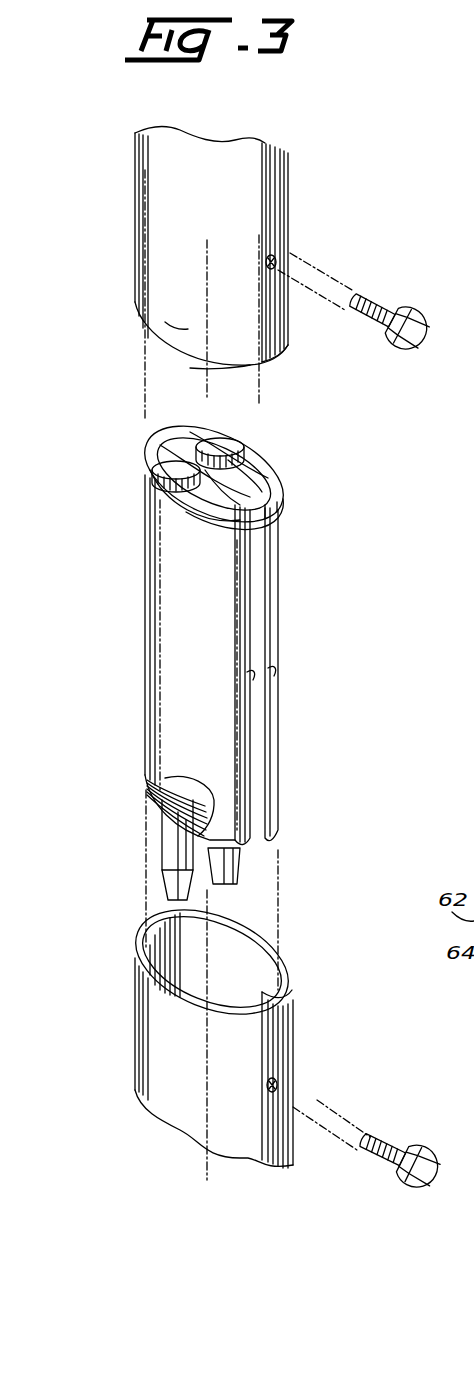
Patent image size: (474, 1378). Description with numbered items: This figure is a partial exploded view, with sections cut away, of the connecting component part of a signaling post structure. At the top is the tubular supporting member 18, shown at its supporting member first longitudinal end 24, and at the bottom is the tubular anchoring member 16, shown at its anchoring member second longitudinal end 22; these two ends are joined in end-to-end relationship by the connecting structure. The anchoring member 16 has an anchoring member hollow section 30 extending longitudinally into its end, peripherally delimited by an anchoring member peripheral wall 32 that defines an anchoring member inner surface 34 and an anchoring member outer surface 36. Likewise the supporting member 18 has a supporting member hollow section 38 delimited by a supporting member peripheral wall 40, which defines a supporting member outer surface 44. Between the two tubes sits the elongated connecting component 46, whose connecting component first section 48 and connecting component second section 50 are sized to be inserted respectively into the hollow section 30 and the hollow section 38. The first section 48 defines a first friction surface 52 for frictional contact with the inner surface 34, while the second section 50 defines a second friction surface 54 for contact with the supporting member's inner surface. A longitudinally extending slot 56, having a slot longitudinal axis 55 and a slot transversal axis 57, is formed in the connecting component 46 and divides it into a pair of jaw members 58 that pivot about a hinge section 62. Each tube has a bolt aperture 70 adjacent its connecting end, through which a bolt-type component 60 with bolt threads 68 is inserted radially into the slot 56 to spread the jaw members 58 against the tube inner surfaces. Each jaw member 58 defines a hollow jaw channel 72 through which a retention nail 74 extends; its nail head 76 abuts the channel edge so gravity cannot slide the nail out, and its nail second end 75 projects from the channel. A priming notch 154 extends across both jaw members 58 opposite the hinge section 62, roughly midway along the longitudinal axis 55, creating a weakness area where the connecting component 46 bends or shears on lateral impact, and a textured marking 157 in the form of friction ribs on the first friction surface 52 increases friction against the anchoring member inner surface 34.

The tubular anchoring member 16 is at (178, 1106).
The tubular supporting member 18 is at (178, 190).
The anchoring member second longitudinal end 22 is at (208, 985).
The supporting member first longitudinal end 24 is at (206, 273).
The anchoring member hollow section 30 is at (208, 961).
The anchoring member peripheral wall 32 is at (283, 1003).
The anchoring member inner surface 34 is at (258, 950).
The anchoring member outer surface 36 is at (158, 1005).
The supporting member hollow section 38 is at (256, 370).
The supporting member peripheral wall 40 is at (278, 355).
The supporting member outer surface 44 is at (183, 330).
The connecting component 46 is at (218, 651).
The connecting component first section 48 is at (209, 687).
The connecting component second section 50 is at (234, 623).
The first friction surface 52 is at (172, 758).
The second friction surface 54 is at (155, 580).
The slot longitudinal axis 55 is at (205, 385).
The longitudinally extending slot 56 is at (259, 611).
The slot transversal axis 57 is at (278, 672).
The jaw members 58 is at (289, 535).
The bolt-type component 60 is at (394, 741).
The hinge section 62 is at (158, 432).
The bolt threads 68 is at (377, 304).
The bolt aperture 70 is at (277, 266).
The hollow jaw channel 72 is at (258, 468).
The retention nail 74 is at (168, 510).
The nail second end 75 is at (156, 884).
The nail head 76 is at (150, 461).
The priming notch 154 is at (255, 676).
The textured marking 157 is at (147, 792).